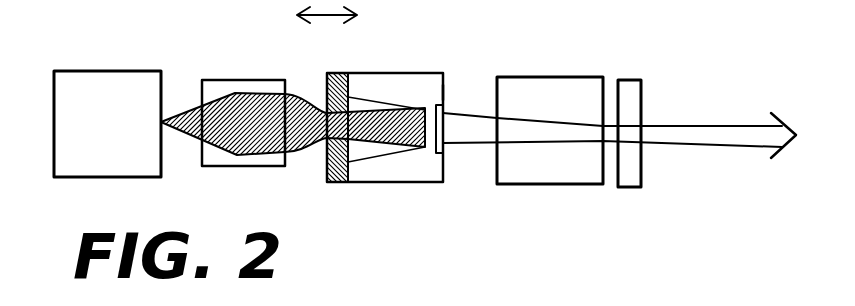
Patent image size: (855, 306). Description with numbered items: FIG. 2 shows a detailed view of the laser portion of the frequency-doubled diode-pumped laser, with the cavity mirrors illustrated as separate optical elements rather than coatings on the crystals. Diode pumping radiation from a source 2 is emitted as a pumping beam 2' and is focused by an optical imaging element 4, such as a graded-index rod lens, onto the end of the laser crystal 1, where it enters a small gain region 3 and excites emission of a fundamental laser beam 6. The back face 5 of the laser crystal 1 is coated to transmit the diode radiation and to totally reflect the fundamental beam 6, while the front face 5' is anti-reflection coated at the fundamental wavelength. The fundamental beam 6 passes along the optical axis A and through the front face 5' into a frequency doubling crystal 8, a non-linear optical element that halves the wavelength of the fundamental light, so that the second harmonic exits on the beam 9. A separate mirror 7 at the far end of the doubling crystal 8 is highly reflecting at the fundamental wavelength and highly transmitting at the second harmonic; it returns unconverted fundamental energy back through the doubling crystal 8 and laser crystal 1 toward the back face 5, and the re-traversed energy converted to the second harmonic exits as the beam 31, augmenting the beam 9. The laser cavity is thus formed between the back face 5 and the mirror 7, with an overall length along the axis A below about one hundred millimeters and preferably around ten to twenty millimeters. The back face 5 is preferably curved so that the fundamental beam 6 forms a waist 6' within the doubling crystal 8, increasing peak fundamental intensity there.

The laser crystal 1 is at (382, 74).
The pump laser diode 2 is at (107, 105).
The pump beam 2' is at (293, 116).
The gain region 3 is at (322, 103).
The optical imaging element 4 is at (233, 167).
The back face 5 is at (335, 142).
The front face 5' is at (462, 80).
The fundamental laser beam 6 is at (455, 151).
The waist 6' is at (507, 83).
The mirror 7 is at (633, 80).
The frequency doubling crystal 8 is at (540, 185).
The frequency-doubled beam 9 is at (619, 121).
The re-traversed second harmonic beam 31 is at (703, 126).
The optical axis A is at (327, 15).